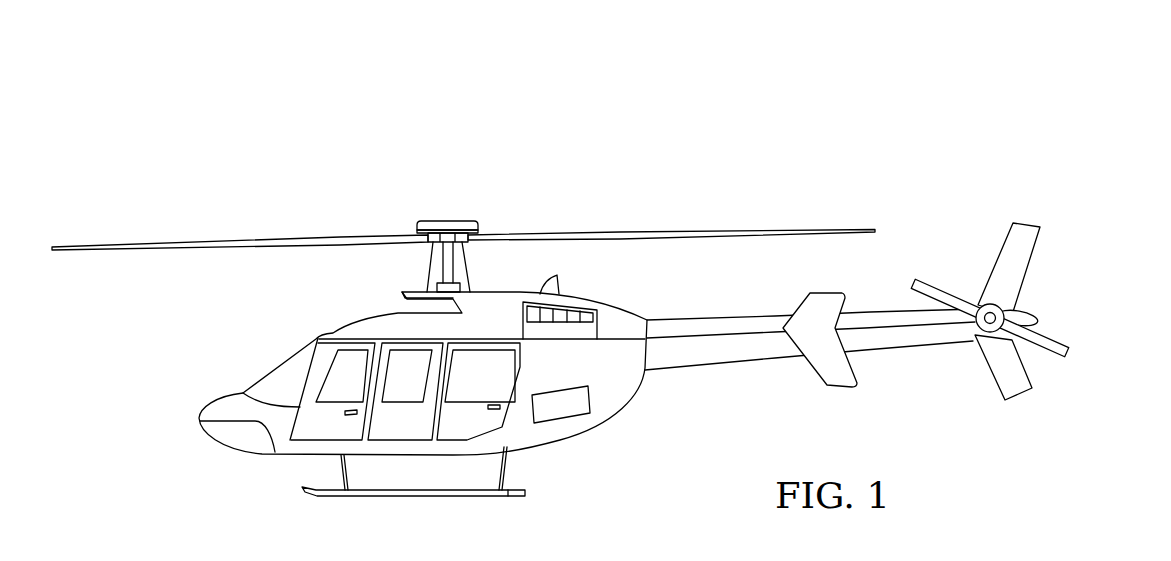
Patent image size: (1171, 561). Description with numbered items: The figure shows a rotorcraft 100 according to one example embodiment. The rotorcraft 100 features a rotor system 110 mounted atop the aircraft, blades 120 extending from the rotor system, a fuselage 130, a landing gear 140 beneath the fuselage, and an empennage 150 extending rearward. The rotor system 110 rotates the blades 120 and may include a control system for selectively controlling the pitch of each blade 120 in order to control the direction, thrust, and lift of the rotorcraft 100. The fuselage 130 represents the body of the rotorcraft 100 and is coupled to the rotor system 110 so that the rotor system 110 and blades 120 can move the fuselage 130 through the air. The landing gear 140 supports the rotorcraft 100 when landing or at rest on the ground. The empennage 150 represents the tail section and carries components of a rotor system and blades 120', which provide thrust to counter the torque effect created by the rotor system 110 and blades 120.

The rotorcraft 100 is at (599, 335).
The rotor system 110 is at (447, 220).
The blades 120 is at (463, 211).
The blades 120' is at (1029, 311).
The fuselage 130 is at (240, 454).
The landing gear 140 is at (392, 497).
The empennage 150 is at (722, 363).